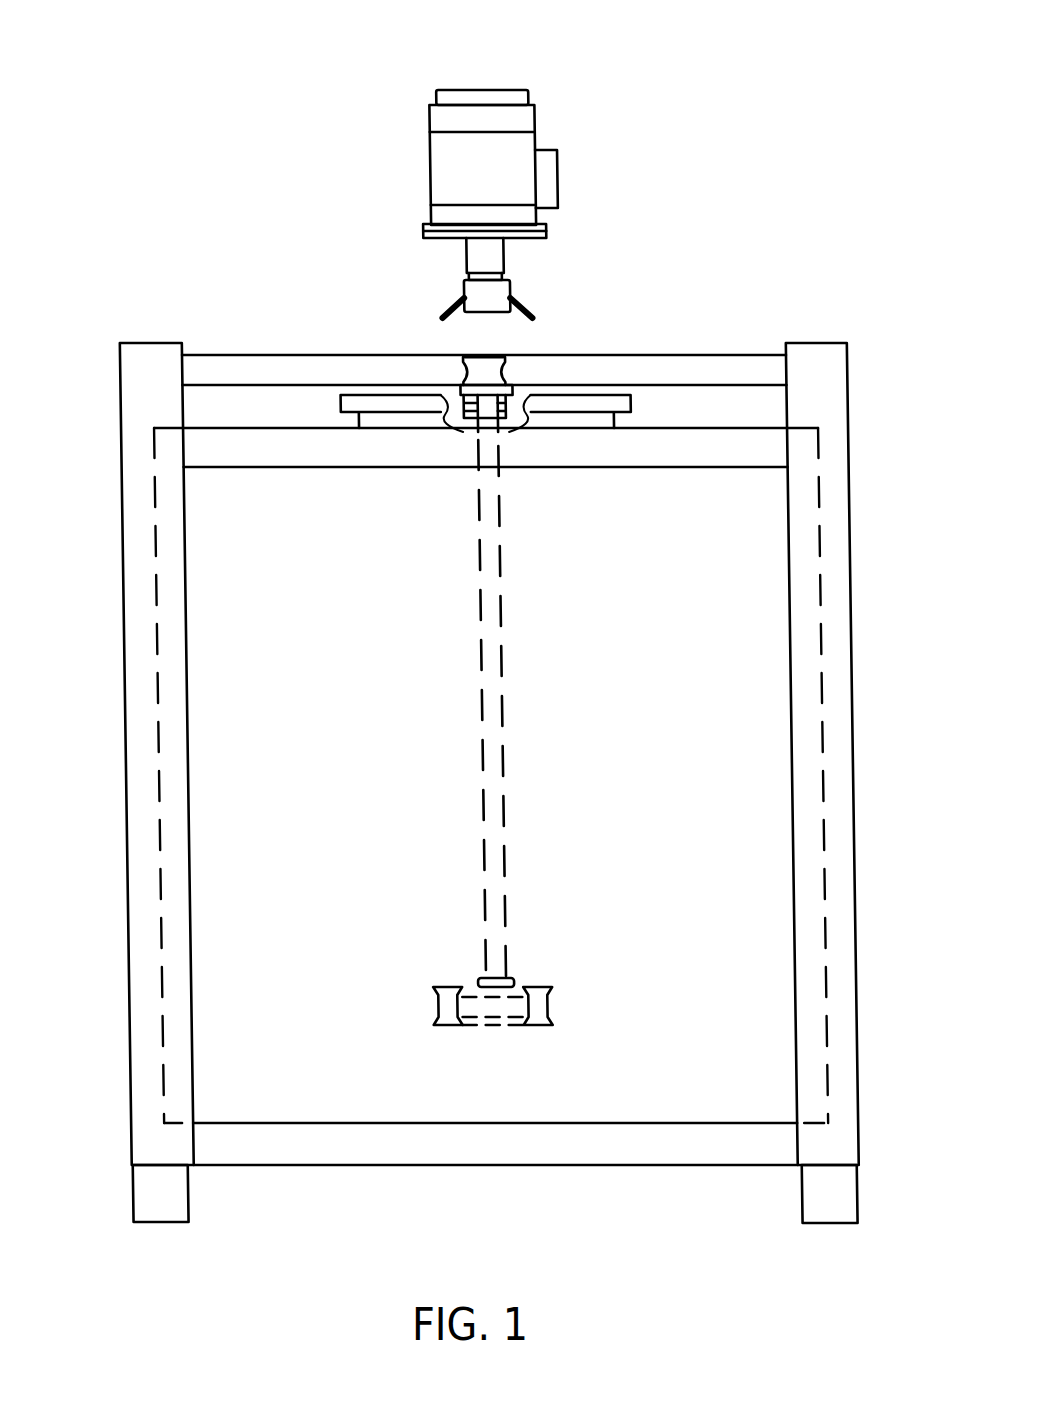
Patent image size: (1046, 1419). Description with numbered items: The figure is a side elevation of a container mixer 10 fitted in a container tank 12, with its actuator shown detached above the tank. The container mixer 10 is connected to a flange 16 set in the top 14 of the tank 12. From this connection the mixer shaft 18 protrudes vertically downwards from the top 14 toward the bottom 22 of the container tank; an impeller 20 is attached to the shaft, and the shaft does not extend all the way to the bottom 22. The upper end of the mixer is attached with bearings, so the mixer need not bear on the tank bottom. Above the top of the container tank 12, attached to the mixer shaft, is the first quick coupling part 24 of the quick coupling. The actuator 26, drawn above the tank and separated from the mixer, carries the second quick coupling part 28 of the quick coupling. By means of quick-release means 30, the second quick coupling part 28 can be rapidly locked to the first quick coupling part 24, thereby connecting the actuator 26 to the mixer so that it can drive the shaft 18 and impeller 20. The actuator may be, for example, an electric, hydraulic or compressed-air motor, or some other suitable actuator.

The container mixer 10 is at (316, 119).
The container tank 12 is at (168, 680).
The top 14 is at (285, 440).
The flange 16 is at (387, 402).
The mixer shaft 18 is at (490, 757).
The impeller 20 is at (520, 1005).
The bottom 22 is at (322, 1145).
The first quick coupling part 24 is at (507, 355).
The actuator 26 is at (507, 153).
The second quick coupling part 28 is at (493, 298).
The quick-release means 30 is at (533, 312).